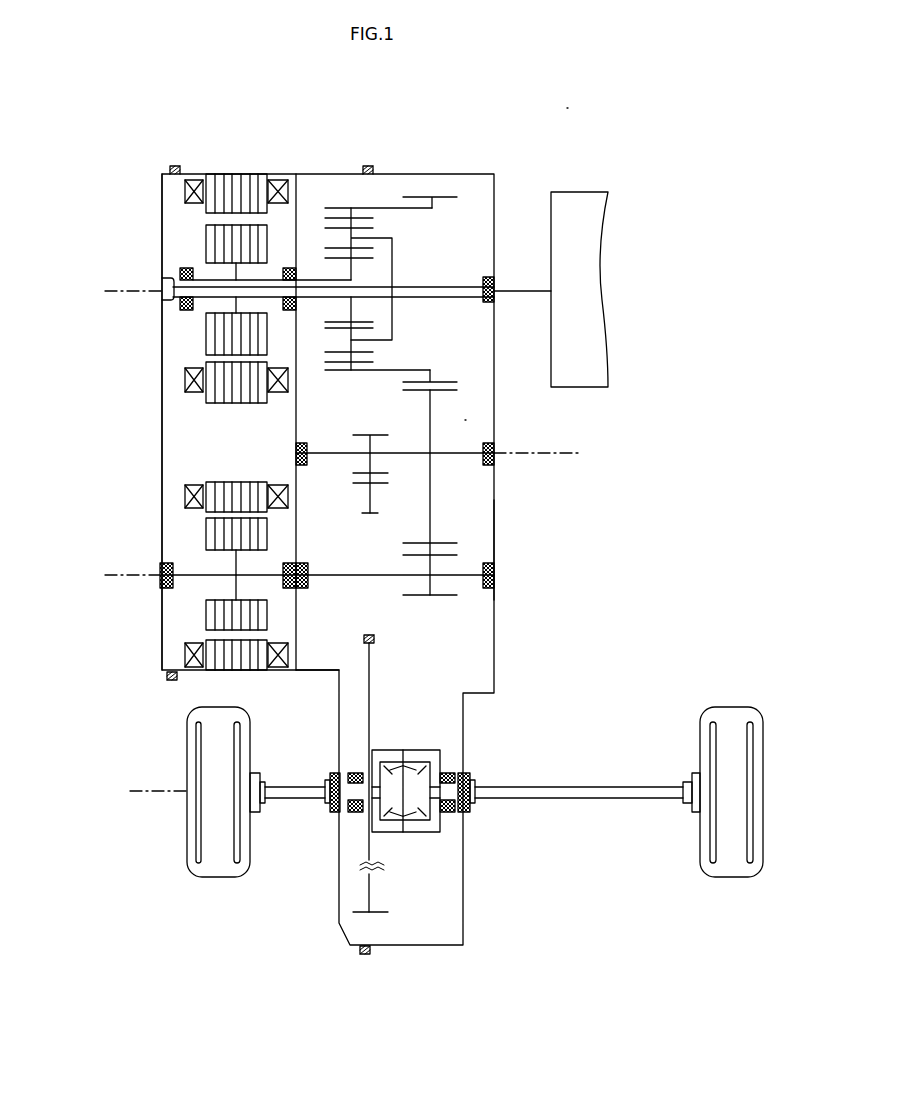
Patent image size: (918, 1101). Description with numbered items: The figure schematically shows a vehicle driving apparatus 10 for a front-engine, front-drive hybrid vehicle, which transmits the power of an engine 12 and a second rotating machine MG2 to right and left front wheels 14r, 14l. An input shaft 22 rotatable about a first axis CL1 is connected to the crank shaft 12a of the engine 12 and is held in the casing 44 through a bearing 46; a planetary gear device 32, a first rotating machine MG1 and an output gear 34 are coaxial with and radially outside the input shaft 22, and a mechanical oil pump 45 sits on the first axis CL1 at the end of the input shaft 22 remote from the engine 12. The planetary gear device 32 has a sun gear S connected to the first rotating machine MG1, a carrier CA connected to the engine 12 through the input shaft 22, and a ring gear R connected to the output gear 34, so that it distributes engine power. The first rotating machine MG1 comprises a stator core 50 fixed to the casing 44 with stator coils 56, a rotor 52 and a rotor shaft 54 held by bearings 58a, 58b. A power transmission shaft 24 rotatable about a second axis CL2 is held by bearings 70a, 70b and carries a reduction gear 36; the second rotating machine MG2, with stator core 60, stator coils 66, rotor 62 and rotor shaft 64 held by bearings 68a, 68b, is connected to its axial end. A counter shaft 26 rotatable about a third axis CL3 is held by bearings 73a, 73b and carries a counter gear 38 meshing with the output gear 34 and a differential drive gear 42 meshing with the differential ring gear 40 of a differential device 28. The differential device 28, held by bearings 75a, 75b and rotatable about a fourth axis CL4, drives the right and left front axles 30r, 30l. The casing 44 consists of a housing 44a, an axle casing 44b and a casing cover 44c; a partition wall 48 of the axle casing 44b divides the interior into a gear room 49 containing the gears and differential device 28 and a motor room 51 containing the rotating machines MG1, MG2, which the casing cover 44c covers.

The vehicle driving apparatus 10 is at (567, 105).
The engine 12 is at (600, 380).
The crank shaft 12a is at (514, 290).
The left front wheel 14l is at (218, 866).
The right front wheel 14r is at (735, 866).
The input shaft 22 is at (437, 287).
The power transmission shaft 24 is at (327, 577).
The counter shaft 26 is at (428, 462).
The differential device 28 is at (437, 840).
The left front axle 30l is at (293, 787).
The right front axle 30r is at (583, 787).
The planetary gear device 32 is at (381, 250).
The output gear 34 is at (405, 197).
The reduction gear 36 is at (425, 598).
The counter gear 38 is at (403, 388).
The differential ring gear 40 is at (357, 487).
The differential drive gear 42 is at (385, 434).
The casing 44 is at (463, 172).
The housing 44a is at (494, 565).
The axle casing 44b is at (325, 672).
The casing cover 44c is at (162, 375).
The mechanical oil pump 45 is at (163, 285).
The bearing 46 is at (483, 300).
The partition wall 48 is at (296, 448).
The gear room 49 is at (465, 420).
The stator core 50 is at (236, 190).
The motor room 51 is at (180, 432).
The rotor 52 is at (210, 245).
The rotor shaft 54 is at (205, 312).
The stator coils 56 is at (190, 180).
The bearing 58a is at (185, 300).
The bearing 58b is at (290, 272).
The stator core 60 is at (230, 660).
The rotor 62 is at (210, 618).
The rotor shaft 64 is at (190, 572).
The stator coils 66 is at (185, 655).
The bearing 68a is at (160, 572).
The bearing 68b is at (298, 560).
The bearing 70a is at (308, 572).
The bearing 70b is at (494, 577).
The bearing 73a is at (296, 458).
The bearing 73b is at (494, 462).
The bearing 75a is at (350, 812).
The bearing 75b is at (455, 812).
The first rotating machine MG1 is at (200, 270).
The second rotating machine MG2 is at (200, 576).
The carrier CA is at (385, 238).
The sun gear S is at (345, 322).
The ring gear R is at (373, 366).
The first rotation axis CL1 is at (110, 295).
The second rotation axis CL2 is at (112, 578).
The third rotation axis CL3 is at (560, 455).
The fourth rotation axis CL4 is at (135, 795).